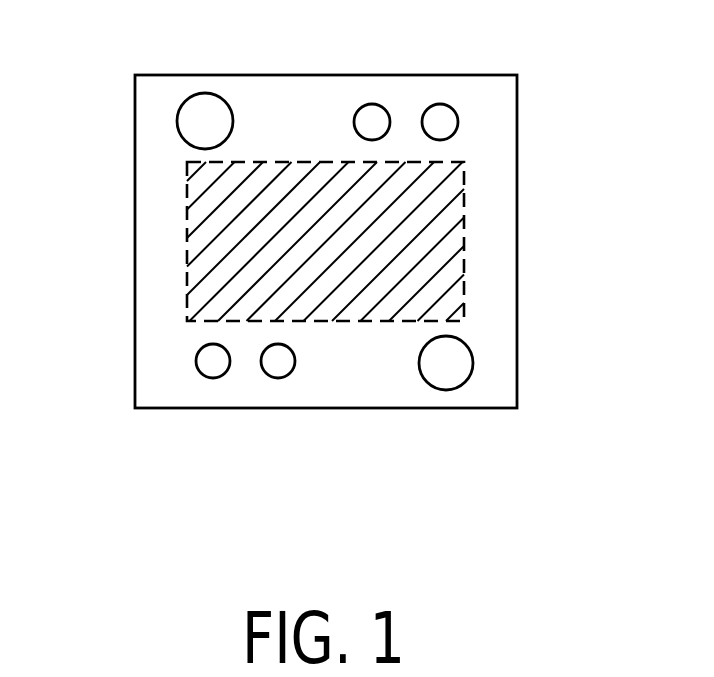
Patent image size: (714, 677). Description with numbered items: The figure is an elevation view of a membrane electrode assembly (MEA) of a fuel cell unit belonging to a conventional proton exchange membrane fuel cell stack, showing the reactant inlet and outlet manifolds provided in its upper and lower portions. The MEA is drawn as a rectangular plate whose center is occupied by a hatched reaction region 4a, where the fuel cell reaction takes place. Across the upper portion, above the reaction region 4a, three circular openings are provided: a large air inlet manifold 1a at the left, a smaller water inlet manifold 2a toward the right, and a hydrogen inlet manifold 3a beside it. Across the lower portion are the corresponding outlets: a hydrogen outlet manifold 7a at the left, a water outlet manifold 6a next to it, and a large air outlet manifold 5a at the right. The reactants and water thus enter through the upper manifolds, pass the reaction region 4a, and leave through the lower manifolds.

The air inlet manifold 1a is at (210, 116).
The water inlet manifold 2a is at (376, 114).
The hydrogen inlet manifold 3a is at (449, 118).
The reaction region 4a is at (450, 262).
The air outlet manifold 5a is at (434, 387).
The water outlet manifold 6a is at (283, 373).
The hydrogen outlet manifold 7a is at (190, 364).